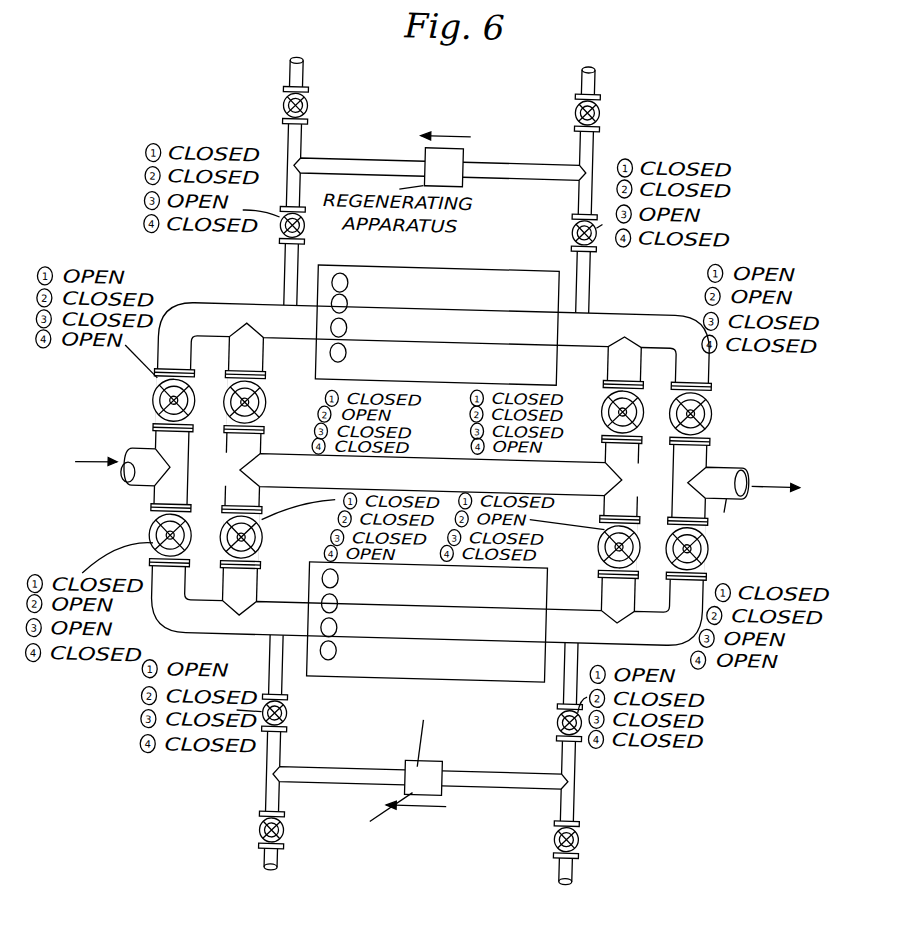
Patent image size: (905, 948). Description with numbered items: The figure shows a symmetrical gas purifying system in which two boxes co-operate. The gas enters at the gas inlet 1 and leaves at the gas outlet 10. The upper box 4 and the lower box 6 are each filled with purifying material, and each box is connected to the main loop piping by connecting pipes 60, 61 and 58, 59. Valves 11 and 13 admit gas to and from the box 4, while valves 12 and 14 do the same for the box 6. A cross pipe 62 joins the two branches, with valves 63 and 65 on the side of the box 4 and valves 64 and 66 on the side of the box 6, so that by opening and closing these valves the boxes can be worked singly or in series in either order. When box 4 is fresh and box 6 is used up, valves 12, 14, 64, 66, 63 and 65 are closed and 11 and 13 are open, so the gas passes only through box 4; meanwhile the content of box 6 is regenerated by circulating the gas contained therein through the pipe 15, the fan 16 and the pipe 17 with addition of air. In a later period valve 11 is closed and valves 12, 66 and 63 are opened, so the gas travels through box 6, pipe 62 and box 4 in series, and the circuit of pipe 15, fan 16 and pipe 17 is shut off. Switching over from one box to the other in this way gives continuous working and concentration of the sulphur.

The gas inlet 1 is at (143, 478).
The box 4 is at (466, 267).
The box 6 is at (529, 680).
The gas outlet 10 is at (711, 463).
The valve 11 is at (163, 407).
The valve 12 is at (154, 542).
The valve 13 is at (705, 396).
The valve 14 is at (709, 543).
The pipe 15 is at (282, 757).
The fan 16 is at (420, 783).
The pipe 17 is at (575, 754).
The connecting pipe 58 is at (243, 592).
The connecting pipe 59 is at (616, 593).
The connecting pipe 60 is at (250, 357).
The connecting pipe 61 is at (617, 355).
The pipe 62 is at (409, 470).
The valve 63 is at (247, 407).
The valve 64 is at (264, 541).
The valve 65 is at (603, 408).
The valve 66 is at (602, 541).